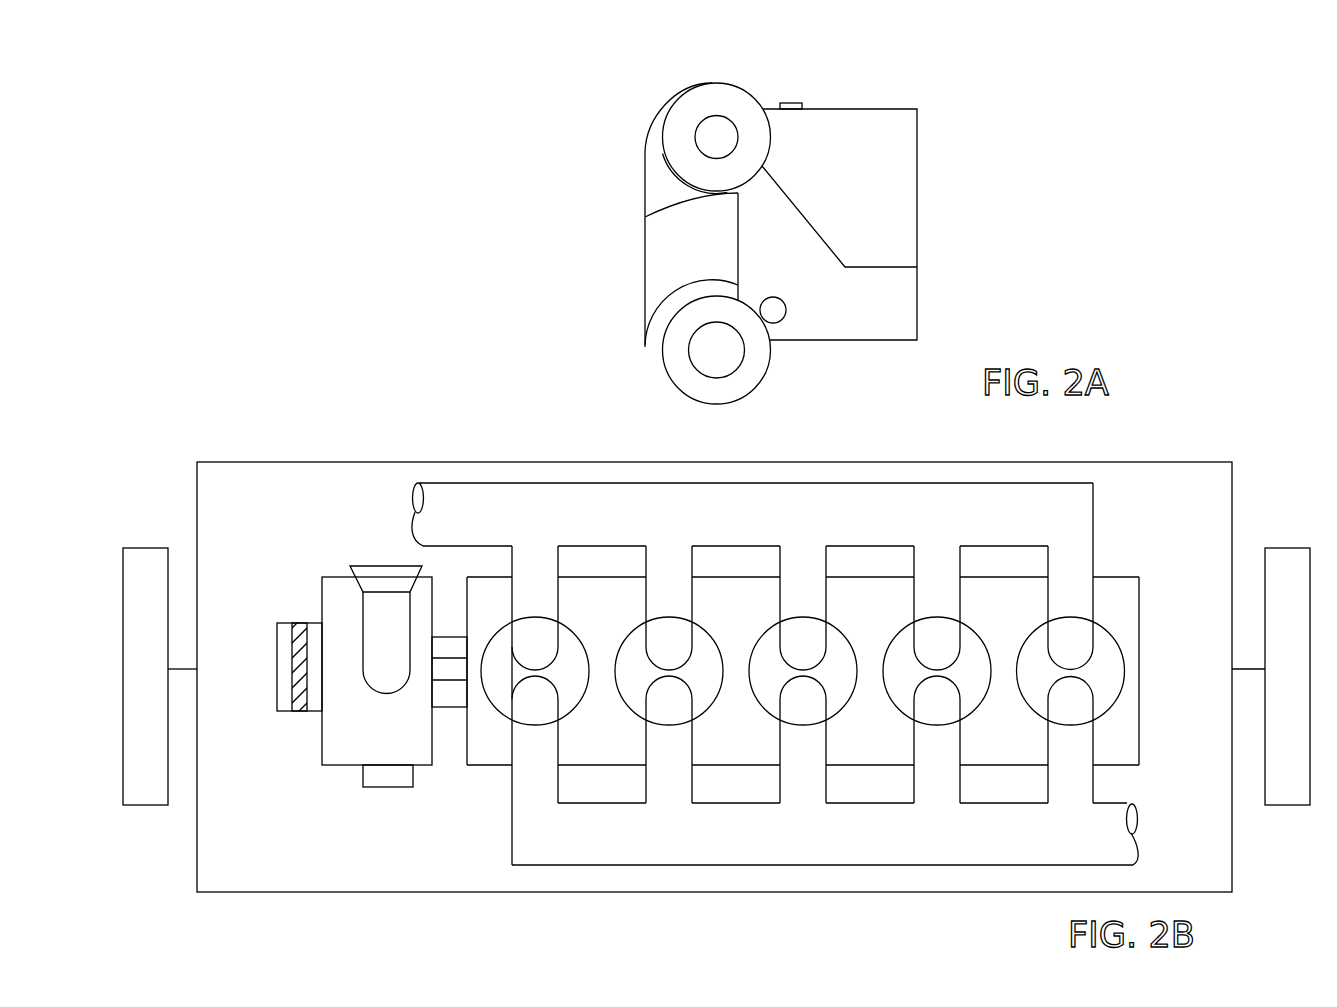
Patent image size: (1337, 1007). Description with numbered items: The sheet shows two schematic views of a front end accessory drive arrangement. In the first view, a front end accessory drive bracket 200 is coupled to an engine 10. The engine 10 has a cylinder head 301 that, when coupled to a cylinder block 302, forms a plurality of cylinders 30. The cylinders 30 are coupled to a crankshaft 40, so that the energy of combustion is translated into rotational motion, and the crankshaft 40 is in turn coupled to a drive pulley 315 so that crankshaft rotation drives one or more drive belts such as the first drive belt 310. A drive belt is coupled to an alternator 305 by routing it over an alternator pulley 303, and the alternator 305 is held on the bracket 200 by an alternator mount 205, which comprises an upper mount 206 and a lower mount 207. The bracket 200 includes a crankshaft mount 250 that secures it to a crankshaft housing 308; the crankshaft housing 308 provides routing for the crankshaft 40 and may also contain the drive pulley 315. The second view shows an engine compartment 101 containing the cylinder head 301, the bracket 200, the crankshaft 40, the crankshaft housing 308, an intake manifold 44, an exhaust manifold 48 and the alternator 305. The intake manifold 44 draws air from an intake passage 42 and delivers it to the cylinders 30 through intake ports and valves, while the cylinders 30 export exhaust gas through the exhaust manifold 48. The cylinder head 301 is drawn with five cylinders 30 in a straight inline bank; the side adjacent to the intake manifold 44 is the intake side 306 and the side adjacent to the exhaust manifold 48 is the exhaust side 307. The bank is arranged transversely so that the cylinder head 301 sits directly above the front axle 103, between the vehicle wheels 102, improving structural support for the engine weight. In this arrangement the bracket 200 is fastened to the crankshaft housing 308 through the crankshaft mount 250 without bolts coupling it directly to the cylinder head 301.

In FIG. 2A, the engine 10 is at (947, 98).
In FIG. 2A, the cylinders 30 is at (790, 100).
In FIG. 2B, the cylinders 30 is at (803, 671).
In FIG. 2A, the crankshaft 40 is at (773, 310).
In FIG. 2B, the crankshaft 40 is at (450, 715).
In FIG. 2B, the intake passage 42 is at (442, 514).
In FIG. 2B, the intake manifold 44 is at (756, 514).
In FIG. 2B, the exhaust manifold 48 is at (865, 826).
In FIG. 2B, the engine compartment 101 is at (351, 446).
In FIG. 2B, the vehicle wheels 102 is at (716, 676).
In FIG. 2B, the front axle 103 is at (182, 670).
In FIG. 2A, the front end accessory drive bracket 200 is at (614, 250).
In FIG. 2B, the front end accessory drive bracket 200 is at (357, 542).
In FIG. 2A, the alternator mount 205 is at (627, 126).
In FIG. 2B, the alternator mount 205 is at (339, 566).
In FIG. 2A, the upper mount 206 is at (663, 103).
In FIG. 2B, the upper mount 206 is at (386, 643).
In FIG. 2A, the lower mount 207 is at (662, 193).
In FIG. 2B, the lower mount 207 is at (388, 776).
In FIG. 2A, the crankshaft mount 250 is at (691, 311).
In FIG. 2A, the cylinder head 301 is at (833, 105).
In FIG. 2B, the cylinder head 301 is at (1140, 623).
In FIG. 2A, the cylinder block 302 is at (839, 224).
In FIG. 2A, the alternator pulley 303 is at (716, 137).
In FIG. 2B, the alternator pulley 303 is at (275, 639).
In FIG. 2B, the alternator 305 is at (377, 671).
In FIG. 2B, the intake side 306 is at (1141, 534).
In FIG. 2B, the exhaust side 307 is at (1149, 788).
In FIG. 2A, the crankshaft housing 308 is at (758, 345).
In FIG. 2B, the crankshaft housing 308 is at (448, 703).
In FIG. 2B, the first drive belt 310 is at (300, 623).
In FIG. 2A, the drive pulley 315 is at (717, 350).